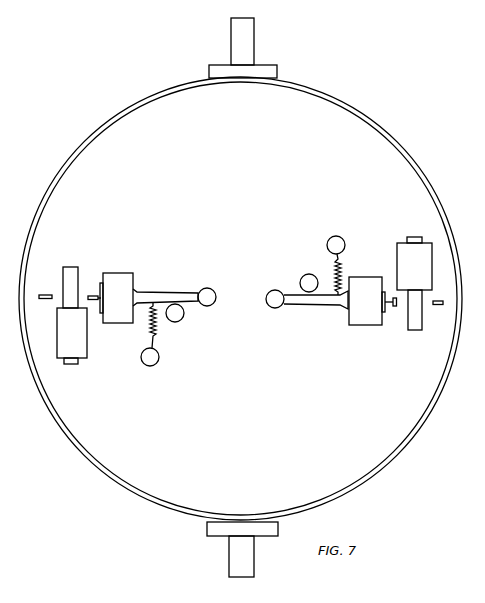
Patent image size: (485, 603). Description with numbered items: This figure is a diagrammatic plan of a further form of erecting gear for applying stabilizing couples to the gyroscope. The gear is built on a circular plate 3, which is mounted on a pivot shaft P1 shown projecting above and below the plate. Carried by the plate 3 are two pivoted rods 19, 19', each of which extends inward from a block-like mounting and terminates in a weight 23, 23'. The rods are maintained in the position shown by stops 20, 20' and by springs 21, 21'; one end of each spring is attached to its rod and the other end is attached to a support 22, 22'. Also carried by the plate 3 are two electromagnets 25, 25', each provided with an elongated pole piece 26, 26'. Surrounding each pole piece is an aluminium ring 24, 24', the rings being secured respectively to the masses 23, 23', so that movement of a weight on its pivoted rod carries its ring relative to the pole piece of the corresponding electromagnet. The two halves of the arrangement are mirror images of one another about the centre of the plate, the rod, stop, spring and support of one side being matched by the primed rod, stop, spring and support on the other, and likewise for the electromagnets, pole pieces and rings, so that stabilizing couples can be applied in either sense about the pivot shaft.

The plate 3 is at (240, 298).
The pivot shaft P1 is at (254, 46).
The pivoted rod 19 is at (174, 290).
The pivoted rod 19' is at (307, 313).
The stop 20 is at (187, 319).
The stop 20' is at (306, 273).
The spring 21 is at (166, 328).
The spring 21' is at (354, 273).
The support 22 is at (159, 367).
The support 22' is at (347, 234).
The weight 23 is at (116, 298).
The weight 23' is at (371, 301).
The aluminium ring 24 is at (70, 280).
The aluminium ring 24' is at (413, 322).
The electromagnet 25 is at (72, 336).
The electromagnet 25' is at (414, 263).
The elongated pole piece 26 is at (55, 295).
The elongated pole piece 26' is at (418, 320).